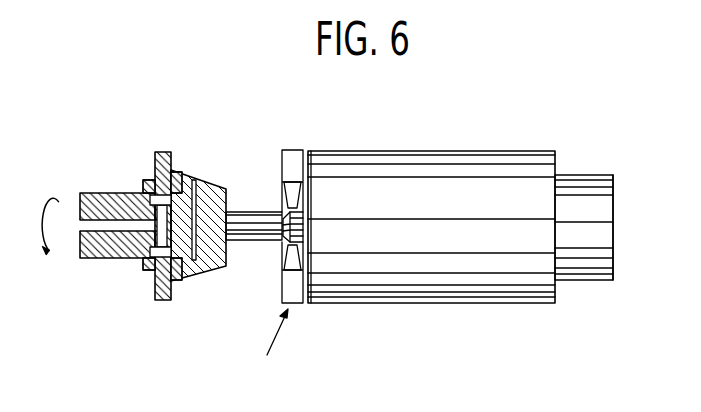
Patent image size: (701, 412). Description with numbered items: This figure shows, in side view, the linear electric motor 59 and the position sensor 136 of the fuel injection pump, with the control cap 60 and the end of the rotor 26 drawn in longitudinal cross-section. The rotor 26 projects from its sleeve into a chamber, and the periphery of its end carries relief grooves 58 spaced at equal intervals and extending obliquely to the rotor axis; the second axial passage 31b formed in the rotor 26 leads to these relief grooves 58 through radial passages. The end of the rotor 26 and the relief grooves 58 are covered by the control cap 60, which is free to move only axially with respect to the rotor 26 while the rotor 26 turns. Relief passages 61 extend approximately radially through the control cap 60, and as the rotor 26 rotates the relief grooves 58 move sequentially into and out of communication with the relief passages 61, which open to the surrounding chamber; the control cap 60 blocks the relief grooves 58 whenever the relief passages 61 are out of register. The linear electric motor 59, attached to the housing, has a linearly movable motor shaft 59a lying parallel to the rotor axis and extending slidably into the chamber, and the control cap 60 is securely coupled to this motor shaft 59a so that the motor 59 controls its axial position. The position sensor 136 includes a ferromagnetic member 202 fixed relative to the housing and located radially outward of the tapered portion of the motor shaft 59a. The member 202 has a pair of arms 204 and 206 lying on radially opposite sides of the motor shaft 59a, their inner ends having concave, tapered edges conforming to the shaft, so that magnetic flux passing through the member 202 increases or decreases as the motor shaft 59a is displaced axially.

The rotor 26 is at (113, 199).
The second axial passage 31b is at (112, 224).
The relief grooves 58 is at (158, 198).
The relief passages 61 is at (177, 180).
The control cap 60 is at (205, 188).
The magnetically permeable member 202 is at (295, 157).
The arm 204 is at (292, 193).
The arm 206 is at (288, 265).
The motor shaft 59a is at (305, 227).
The linear electric motor 59 is at (423, 197).
The position sensor 136 is at (268, 347).